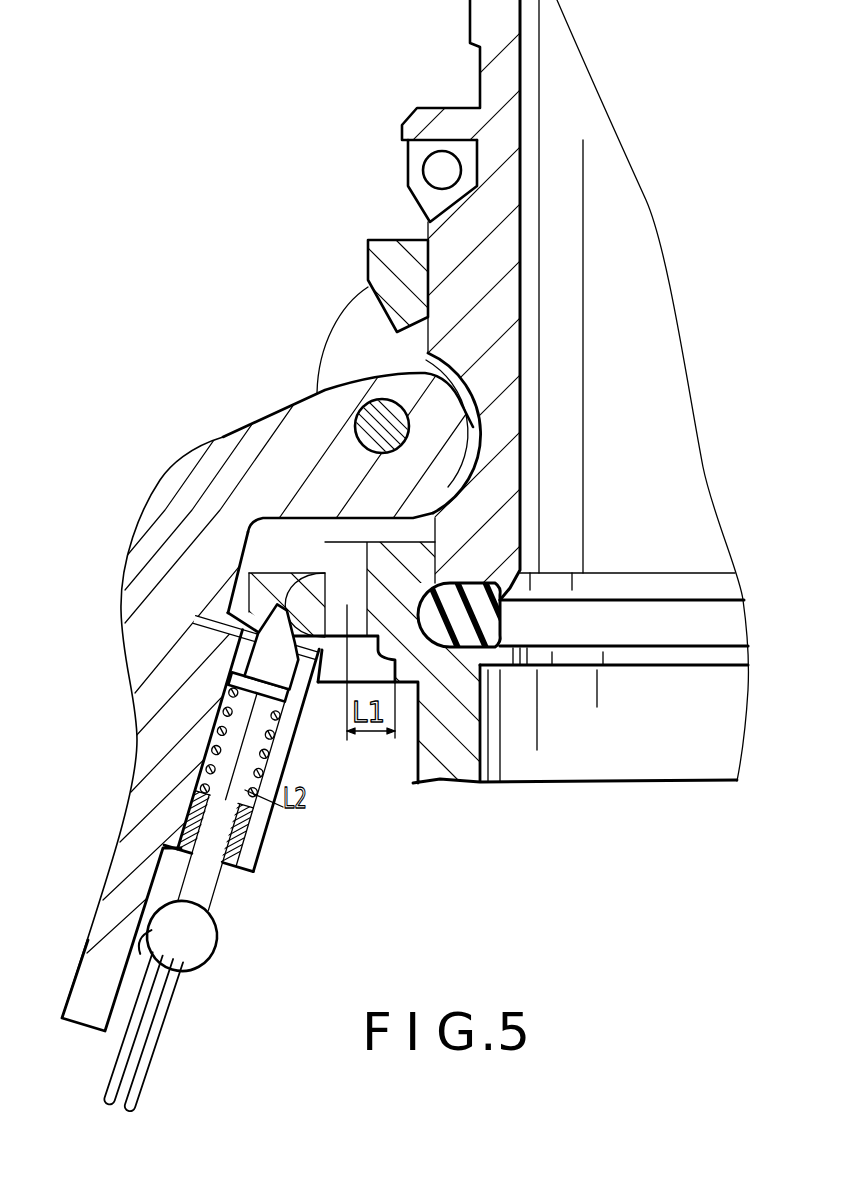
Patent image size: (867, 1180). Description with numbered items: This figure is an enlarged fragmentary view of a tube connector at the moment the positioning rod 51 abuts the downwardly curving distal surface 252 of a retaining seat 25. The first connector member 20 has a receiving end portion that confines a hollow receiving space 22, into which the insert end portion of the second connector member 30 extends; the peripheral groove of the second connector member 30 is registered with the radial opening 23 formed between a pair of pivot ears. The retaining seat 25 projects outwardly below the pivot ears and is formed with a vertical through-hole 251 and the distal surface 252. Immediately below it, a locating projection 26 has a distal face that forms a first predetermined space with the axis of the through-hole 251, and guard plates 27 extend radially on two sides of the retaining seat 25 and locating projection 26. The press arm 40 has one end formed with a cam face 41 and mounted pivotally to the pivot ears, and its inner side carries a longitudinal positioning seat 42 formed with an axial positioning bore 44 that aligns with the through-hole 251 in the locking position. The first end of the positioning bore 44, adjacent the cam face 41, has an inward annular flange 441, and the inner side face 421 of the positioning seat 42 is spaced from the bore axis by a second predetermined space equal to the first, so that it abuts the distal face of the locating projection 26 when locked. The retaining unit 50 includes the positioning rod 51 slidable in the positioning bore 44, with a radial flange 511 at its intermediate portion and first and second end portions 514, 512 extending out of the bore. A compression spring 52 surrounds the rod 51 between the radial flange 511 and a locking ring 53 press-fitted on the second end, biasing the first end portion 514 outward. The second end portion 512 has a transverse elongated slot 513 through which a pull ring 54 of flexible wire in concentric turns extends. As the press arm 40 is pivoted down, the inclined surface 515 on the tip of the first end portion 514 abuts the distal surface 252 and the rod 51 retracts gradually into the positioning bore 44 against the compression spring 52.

The first connector member 20 is at (379, 236).
The hollow receiving space 22 is at (380, 273).
The radial opening 23 is at (347, 340).
The retaining seat 25 is at (387, 557).
The through-hole 251 is at (333, 582).
The distal surface 252 is at (240, 553).
The locating projection 26 is at (402, 682).
The guard plate 27 is at (240, 575).
The second connector member 30 is at (430, 101).
The press arm 40 is at (223, 439).
The cam face 41 is at (365, 380).
The positioning seat 42 is at (265, 848).
The inner side face 421 is at (263, 820).
The positioning bore 44 is at (235, 624).
The inward annular flange 441 is at (255, 612).
The retaining unit 50 is at (222, 780).
The positioning rod 51 is at (210, 850).
The radial flange 511 is at (260, 670).
The second end portion 512 is at (202, 950).
The elongated slot 513 is at (150, 933).
The first end portion 514 is at (243, 637).
The inclined surface 515 is at (318, 685).
The compression spring 52 is at (283, 755).
The locking ring 53 is at (253, 870).
The pull ring 54 is at (153, 1050).